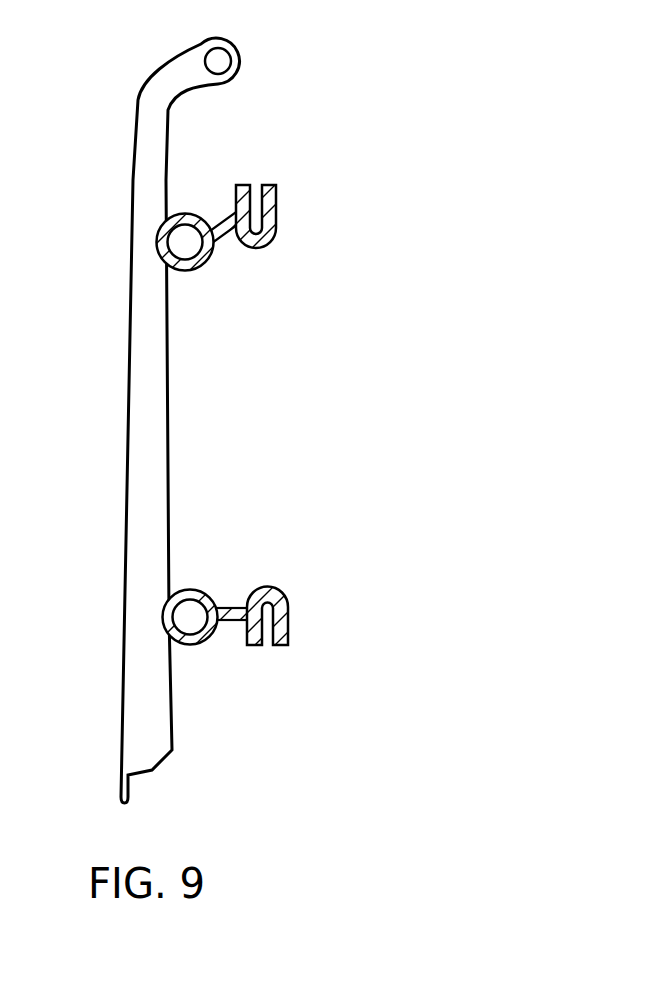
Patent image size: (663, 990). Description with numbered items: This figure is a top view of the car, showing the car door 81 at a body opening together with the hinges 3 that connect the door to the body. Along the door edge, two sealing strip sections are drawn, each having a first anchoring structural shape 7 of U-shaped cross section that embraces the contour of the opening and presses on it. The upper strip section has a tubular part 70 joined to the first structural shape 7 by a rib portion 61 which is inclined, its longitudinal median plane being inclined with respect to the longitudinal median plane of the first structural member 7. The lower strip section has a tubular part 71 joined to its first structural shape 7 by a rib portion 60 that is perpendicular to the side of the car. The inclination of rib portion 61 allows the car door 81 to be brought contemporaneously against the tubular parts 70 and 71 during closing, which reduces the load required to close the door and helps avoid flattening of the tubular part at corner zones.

The hinges 3 is at (254, 58).
The first anchoring structural shape 7 is at (278, 205).
The rib portion 60 is at (230, 620).
The rib portion 61 is at (224, 238).
The tubular part 70 is at (185, 237).
The tubular part 71 is at (190, 608).
The car door 81 is at (122, 397).